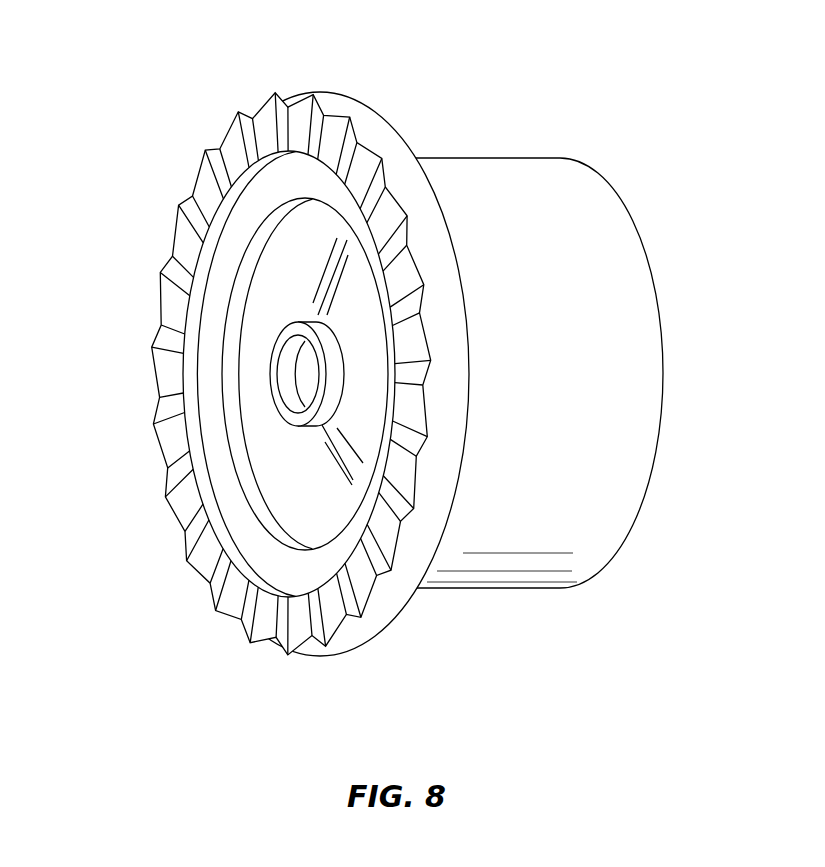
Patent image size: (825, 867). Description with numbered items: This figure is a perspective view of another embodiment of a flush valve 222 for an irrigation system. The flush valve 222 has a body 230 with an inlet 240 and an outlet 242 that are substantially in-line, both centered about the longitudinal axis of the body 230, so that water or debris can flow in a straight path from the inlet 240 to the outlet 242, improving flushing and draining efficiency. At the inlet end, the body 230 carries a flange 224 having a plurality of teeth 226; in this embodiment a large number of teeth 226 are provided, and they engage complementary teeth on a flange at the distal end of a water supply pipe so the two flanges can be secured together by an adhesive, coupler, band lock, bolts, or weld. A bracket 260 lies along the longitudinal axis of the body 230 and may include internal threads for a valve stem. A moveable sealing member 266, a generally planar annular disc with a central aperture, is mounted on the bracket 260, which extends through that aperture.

The flush valve 222 is at (430, 382).
The flange 224 is at (387, 128).
The plurality of teeth 226 is at (296, 656).
The body 230 is at (577, 158).
The inlet 240 is at (264, 397).
The outlet 242 is at (677, 375).
The bracket 260 is at (283, 418).
The moveable sealing member 266 is at (272, 279).